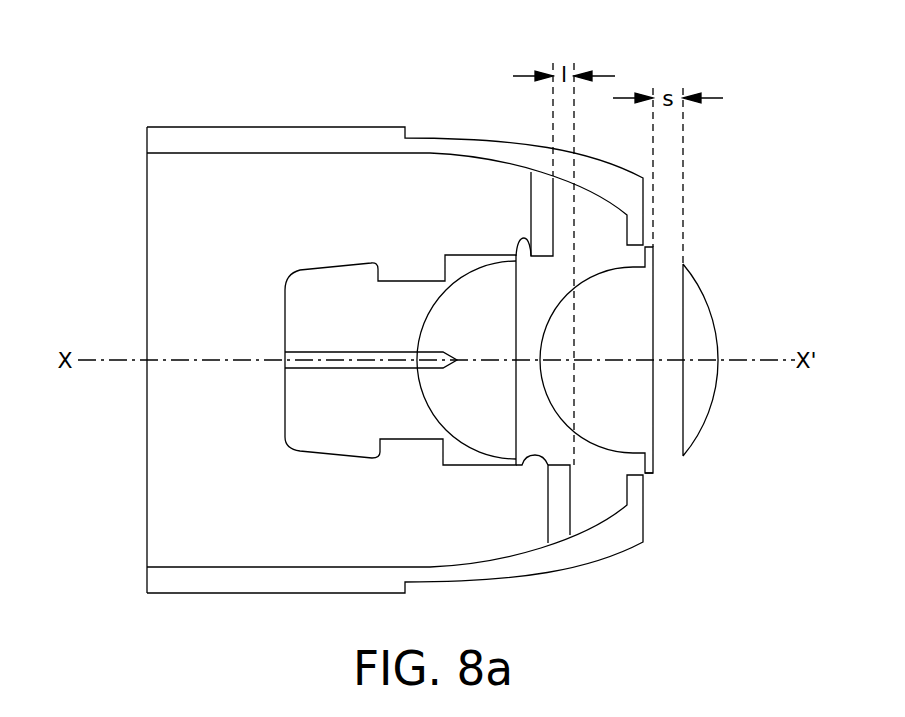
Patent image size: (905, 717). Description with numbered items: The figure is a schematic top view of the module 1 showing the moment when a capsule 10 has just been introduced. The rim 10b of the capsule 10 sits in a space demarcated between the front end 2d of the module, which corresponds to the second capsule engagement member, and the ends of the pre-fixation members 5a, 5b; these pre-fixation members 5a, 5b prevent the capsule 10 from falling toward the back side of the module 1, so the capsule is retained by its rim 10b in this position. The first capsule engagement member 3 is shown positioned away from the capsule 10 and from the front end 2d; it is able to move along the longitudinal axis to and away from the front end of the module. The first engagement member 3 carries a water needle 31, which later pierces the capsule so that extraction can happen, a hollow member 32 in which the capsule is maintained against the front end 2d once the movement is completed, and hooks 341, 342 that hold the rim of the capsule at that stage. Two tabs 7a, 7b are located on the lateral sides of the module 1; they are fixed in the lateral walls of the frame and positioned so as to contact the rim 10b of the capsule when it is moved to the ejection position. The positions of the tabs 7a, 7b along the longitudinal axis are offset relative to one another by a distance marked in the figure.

The module 1 is at (222, 80).
The first capsule engagement member 3 is at (292, 310).
The water needle 31 is at (325, 369).
The hollow member 32 is at (425, 399).
The hook 341 is at (533, 458).
The hook 342 is at (523, 242).
The pre-fixation member 5a is at (598, 163).
The pre-fixation member 5b is at (598, 558).
The tab 7a is at (530, 180).
The tab 7b is at (548, 533).
The capsule 10 is at (612, 453).
The rim of the capsule 10b is at (651, 478).
The front end 2d is at (712, 318).